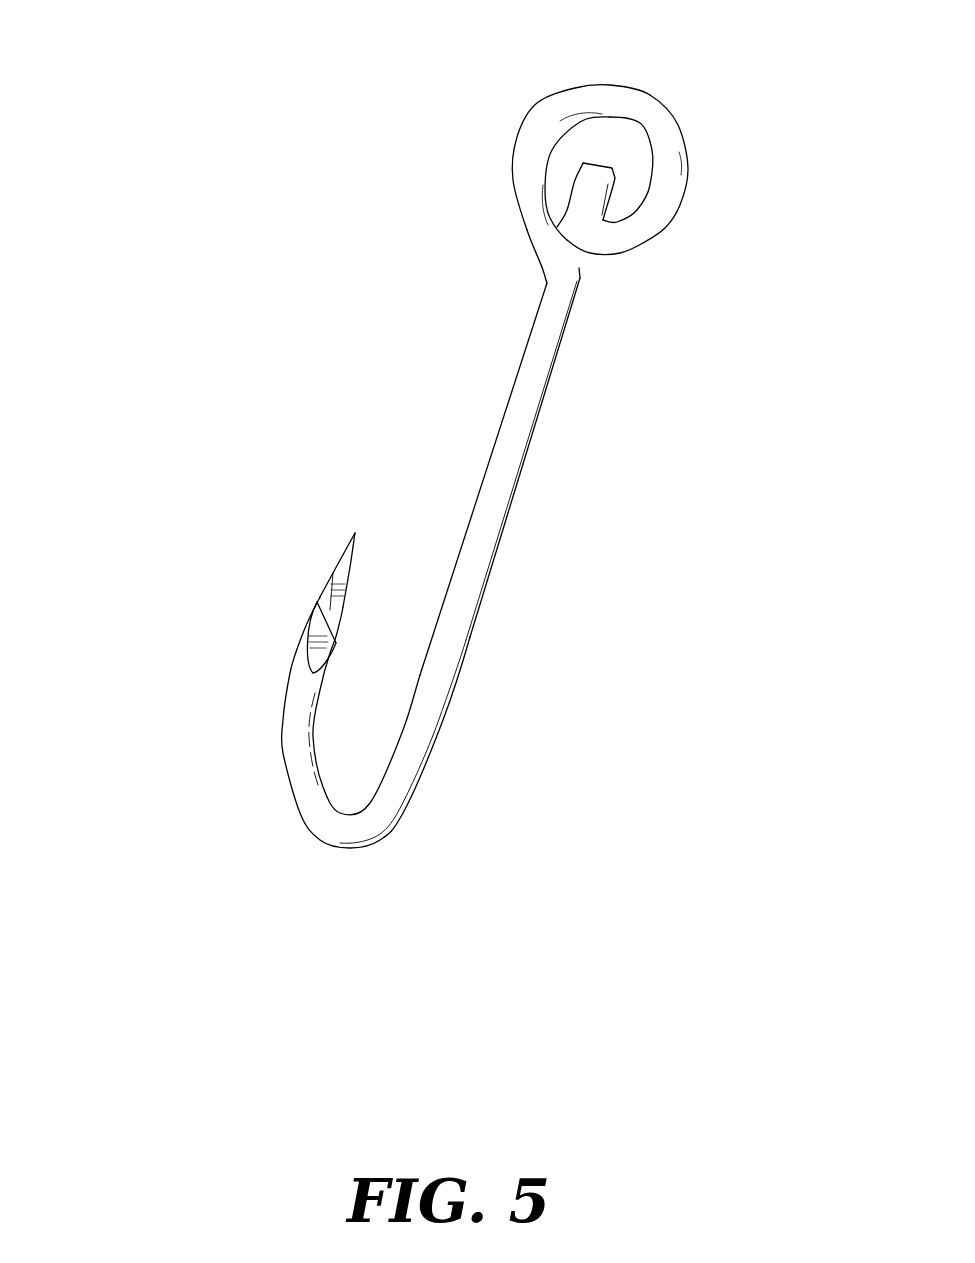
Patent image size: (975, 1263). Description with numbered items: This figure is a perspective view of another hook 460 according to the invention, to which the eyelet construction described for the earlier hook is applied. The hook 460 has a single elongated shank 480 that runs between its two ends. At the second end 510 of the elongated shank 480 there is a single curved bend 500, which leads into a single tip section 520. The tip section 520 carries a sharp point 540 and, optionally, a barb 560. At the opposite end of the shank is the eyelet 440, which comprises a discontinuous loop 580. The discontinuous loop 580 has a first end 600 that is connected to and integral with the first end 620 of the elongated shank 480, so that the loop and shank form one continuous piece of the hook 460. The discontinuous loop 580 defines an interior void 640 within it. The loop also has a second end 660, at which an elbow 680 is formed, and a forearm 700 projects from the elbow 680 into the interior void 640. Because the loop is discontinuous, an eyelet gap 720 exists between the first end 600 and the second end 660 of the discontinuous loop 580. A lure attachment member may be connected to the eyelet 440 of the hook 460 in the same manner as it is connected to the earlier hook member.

The eyelet 440 is at (471, 62).
The hook 460 is at (130, 1112).
The elongated shank 480 is at (510, 500).
The curved bend 500 is at (333, 845).
The second end 510 is at (403, 813).
The tip section 520 is at (253, 510).
The sharp point 540 is at (355, 533).
The barb 560 is at (337, 647).
The discontinuous loop 580 is at (563, 108).
The first end 600 is at (578, 262).
The first end 620 is at (547, 283).
The interior void 640 is at (618, 135).
The second end 660 is at (640, 238).
The elbow 680 is at (593, 257).
The forearm 700 is at (615, 178).
The eyelet gap 720 is at (605, 285).